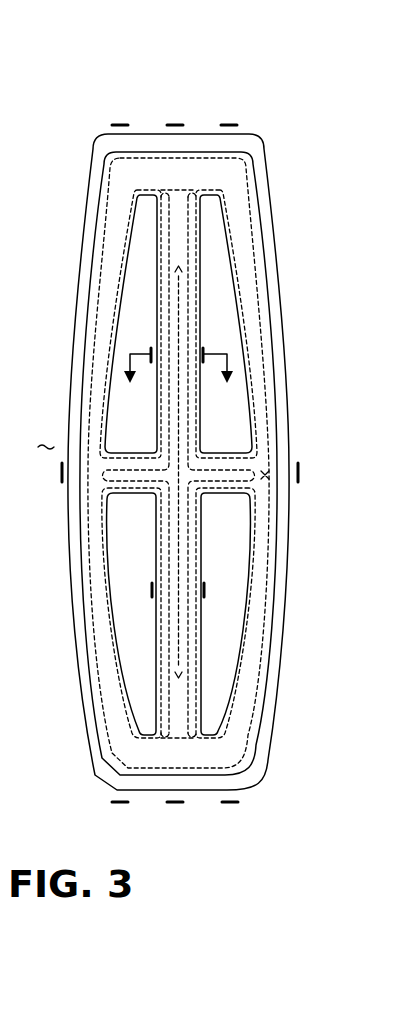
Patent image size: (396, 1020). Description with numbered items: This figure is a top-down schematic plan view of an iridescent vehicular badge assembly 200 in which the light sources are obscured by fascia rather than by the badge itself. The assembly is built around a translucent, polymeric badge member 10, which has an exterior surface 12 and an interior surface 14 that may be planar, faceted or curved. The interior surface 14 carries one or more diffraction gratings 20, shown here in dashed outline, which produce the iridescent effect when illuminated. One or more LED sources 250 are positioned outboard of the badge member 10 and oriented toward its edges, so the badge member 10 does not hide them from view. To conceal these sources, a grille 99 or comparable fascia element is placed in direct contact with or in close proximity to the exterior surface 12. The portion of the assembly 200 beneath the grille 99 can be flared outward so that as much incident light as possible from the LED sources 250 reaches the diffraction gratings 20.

The iridescent vehicular badge assembly 200 is at (345, 204).
The badge member 10 is at (257, 140).
The exterior surface 12 is at (176, 167).
The diffraction gratings 20 is at (215, 155).
The LED sources 250 is at (120, 123).
The interior surface 14 is at (267, 477).
The grille 99 is at (48, 435).